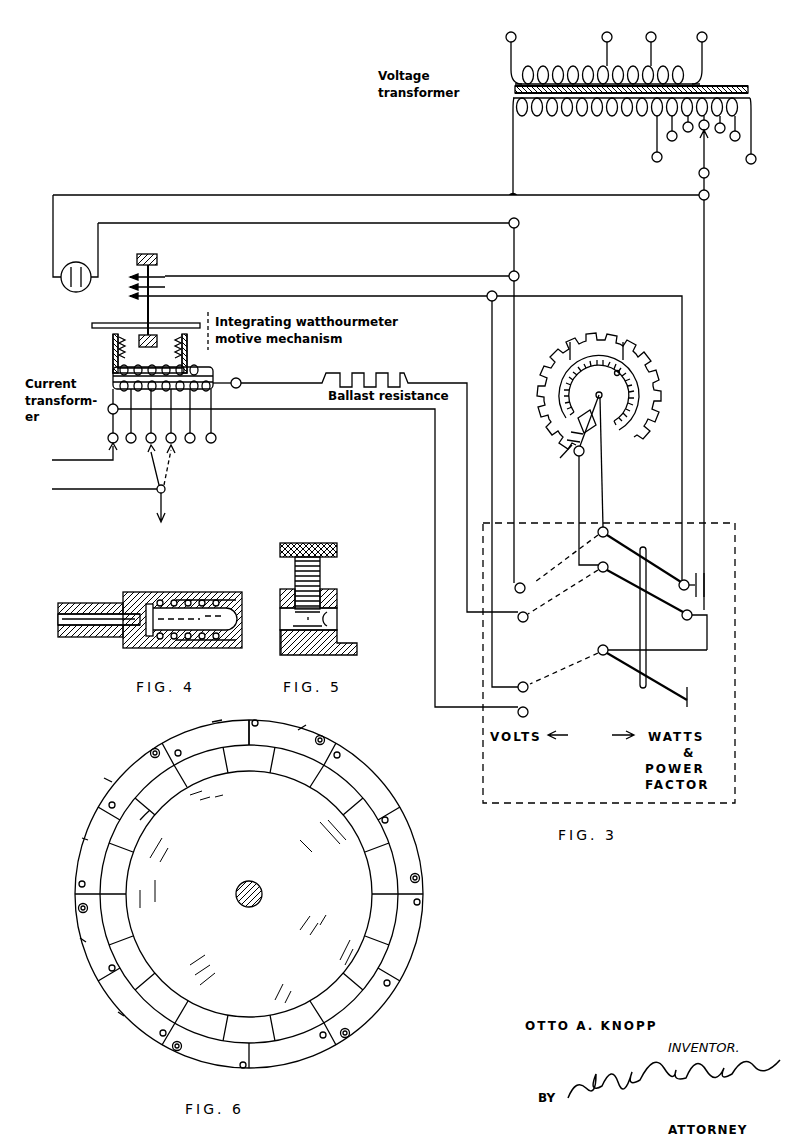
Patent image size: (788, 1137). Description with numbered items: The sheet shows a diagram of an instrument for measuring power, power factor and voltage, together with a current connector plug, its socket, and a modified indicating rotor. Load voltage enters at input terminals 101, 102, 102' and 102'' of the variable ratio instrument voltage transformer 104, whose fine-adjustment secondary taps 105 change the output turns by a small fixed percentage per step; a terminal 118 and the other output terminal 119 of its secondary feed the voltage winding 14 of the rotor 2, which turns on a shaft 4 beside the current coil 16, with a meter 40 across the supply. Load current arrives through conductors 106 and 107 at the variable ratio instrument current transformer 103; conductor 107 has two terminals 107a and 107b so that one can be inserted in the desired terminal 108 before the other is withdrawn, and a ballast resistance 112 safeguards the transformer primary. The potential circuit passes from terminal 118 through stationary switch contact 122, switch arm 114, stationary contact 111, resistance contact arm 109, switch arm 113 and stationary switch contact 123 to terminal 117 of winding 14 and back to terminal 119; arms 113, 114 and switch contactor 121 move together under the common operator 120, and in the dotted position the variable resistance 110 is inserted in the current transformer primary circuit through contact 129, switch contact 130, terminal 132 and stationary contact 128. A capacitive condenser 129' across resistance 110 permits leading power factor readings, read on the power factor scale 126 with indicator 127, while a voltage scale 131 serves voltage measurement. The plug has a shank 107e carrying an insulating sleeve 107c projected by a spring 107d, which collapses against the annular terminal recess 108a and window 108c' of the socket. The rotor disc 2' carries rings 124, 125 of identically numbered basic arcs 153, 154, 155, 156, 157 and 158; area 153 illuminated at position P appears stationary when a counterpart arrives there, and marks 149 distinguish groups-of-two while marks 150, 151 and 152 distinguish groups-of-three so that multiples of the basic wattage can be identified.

In FIG. 3, the input terminal 101 is at (510, 28).
In FIG. 3, the input terminal 102 is at (716, 48).
In FIG. 3, the line terminal 102' is at (642, 39).
In FIG. 3, the line terminal 102'' is at (591, 39).
In FIG. 3, the variable ratio instrument voltage transformer 104 is at (508, 92).
In FIG. 3, the fine-adjustment secondary taps 105 is at (655, 156).
In FIG. 3, the terminal of the transformer secondary 118 is at (709, 195).
In FIG. 3, the voltmeter 40 is at (62, 280).
In FIG. 3, the voltage winding 14 is at (130, 286).
In FIG. 3, the rotor 2 is at (136, 319).
In FIG. 3, the shaft 4 is at (140, 308).
In FIG. 3, the current coil 16 is at (110, 349).
In FIG. 3, the variable ratio instrument current transformer 103 is at (118, 385).
In FIG. 3, the load current input conductor 106 is at (72, 460).
In FIG. 3, the load current input conductor 107 is at (72, 489).
In FIG. 3, the terminal 107a is at (154, 470).
In FIG. 4, the terminal 107a is at (242, 590).
In FIG. 3, the terminal 107b is at (163, 497).
In FIG. 3, the terminal 108 is at (216, 438).
In FIG. 5, the terminal 108 is at (338, 600).
In FIG. 3, the ballast resistance 112 is at (360, 366).
In FIG. 3, the terminal of the potential coil 117 is at (490, 300).
In FIG. 3, the output terminal of the voltage transformer 119 is at (518, 276).
In FIG. 3, the variable resistance 110 is at (582, 338).
In FIG. 3, the power factor scale 126 is at (622, 334).
In FIG. 3, the voltage scale 131 is at (568, 342).
In FIG. 3, the indicator 127 is at (564, 442).
In FIG. 3, the resistance contact arm 109 is at (571, 456).
In FIG. 3, the stationary contact 111 is at (575, 460).
In FIG. 3, the switch arm 113 is at (582, 545).
In FIG. 3, the switch arm 114 is at (630, 586).
In FIG. 3, the terminal 132 is at (526, 578).
In FIG. 3, the switch contact 130 is at (526, 621).
In FIG. 3, the stationary switch contact 123 is at (680, 580).
In FIG. 3, the capacitive condenser 129' is at (719, 576).
In FIG. 3, the common operator 120 is at (634, 625).
In FIG. 3, the stationary switch contact 122 is at (692, 620).
In FIG. 3, the stationary contact 128 is at (536, 688).
In FIG. 3, the switch contactor 121 is at (630, 670).
In FIG. 3, the contact 129 is at (536, 716).
In FIG. 4, the shank 107e is at (116, 600).
In FIG. 4, the insulating sleeve 107c is at (172, 600).
In FIG. 4, the spring 107d is at (188, 590).
In FIG. 5, the socket window 108c' is at (333, 622).
In FIG. 5, the annular terminal recess 108a is at (277, 650).
In FIG. 6, the ring 124 is at (110, 768).
In FIG. 6, the ring 125 is at (145, 828).
In FIG. 6, the disc 2' is at (246, 897).
In FIG. 6, the marks 149 is at (96, 774).
In FIG. 6, the mark 150 is at (250, 728).
In FIG. 6, the mark 151 is at (338, 757).
In FIG. 6, the mark 152 is at (148, 748).
In FIG. 6, the basic arc 153 is at (305, 722).
In FIG. 6, the position P is at (272, 726).
In FIG. 6, the area 154 is at (220, 722).
In FIG. 6, the area 155 is at (106, 776).
In FIG. 6, the area 156 is at (84, 838).
In FIG. 6, the scale segment 157 is at (82, 940).
In FIG. 6, the scale segment 158 is at (120, 1014).